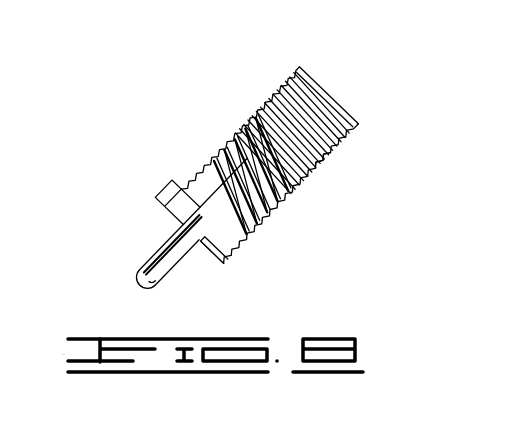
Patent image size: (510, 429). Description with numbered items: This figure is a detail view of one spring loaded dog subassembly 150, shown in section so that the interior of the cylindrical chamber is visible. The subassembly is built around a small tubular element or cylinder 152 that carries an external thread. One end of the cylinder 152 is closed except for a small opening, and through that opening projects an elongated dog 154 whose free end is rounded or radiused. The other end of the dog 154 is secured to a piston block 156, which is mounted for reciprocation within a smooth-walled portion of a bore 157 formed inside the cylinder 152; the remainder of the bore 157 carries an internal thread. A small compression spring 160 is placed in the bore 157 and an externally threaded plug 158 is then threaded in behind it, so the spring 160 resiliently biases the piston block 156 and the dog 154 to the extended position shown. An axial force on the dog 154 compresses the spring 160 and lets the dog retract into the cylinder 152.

The spring loaded dog subassembly 150 is at (180, 153).
The cylinder 152 is at (260, 130).
The dog 154 is at (147, 257).
The piston block 156 is at (173, 185).
The bore 157 is at (223, 132).
The plug 158 is at (317, 100).
The compression spring 160 is at (300, 175).